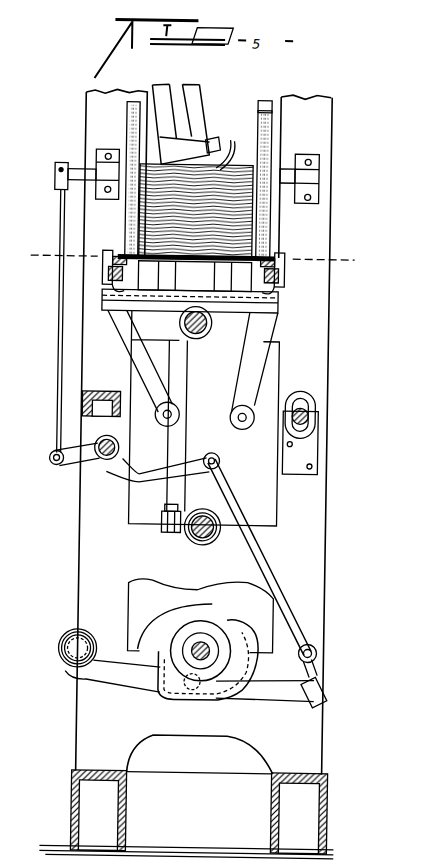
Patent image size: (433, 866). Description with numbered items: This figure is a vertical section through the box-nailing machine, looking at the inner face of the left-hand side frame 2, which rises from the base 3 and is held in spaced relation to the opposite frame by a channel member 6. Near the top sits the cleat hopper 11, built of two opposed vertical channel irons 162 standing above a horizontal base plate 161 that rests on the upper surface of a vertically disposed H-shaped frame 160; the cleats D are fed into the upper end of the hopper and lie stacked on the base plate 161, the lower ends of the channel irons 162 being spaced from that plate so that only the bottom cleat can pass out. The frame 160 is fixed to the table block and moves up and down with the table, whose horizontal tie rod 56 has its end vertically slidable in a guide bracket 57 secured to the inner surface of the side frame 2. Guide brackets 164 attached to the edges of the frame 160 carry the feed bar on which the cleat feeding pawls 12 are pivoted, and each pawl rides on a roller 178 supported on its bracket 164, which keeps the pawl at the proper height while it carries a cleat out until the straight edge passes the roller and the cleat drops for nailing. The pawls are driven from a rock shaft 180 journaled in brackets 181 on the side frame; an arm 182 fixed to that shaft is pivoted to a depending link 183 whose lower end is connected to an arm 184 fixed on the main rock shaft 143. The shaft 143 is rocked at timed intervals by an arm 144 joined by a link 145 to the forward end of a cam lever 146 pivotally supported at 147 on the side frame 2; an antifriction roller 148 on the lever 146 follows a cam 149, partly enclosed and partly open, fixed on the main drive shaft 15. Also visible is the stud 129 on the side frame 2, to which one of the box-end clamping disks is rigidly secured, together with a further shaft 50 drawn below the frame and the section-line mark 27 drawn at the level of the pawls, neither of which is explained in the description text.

The side frame 2 is at (82, 549).
The base 3 is at (110, 772).
The channel member 6 is at (103, 393).
The cleat hopper 11 is at (258, 108).
The cleat feeding pawl 12 is at (112, 257).
The main drive shaft 15 is at (207, 628).
The section line 27 is at (193, 257).
The shaft 50 is at (194, 540).
The tie rod 56 is at (300, 405).
The guide bracket 57 is at (303, 478).
The stud 129 is at (200, 335).
The main rock shaft 143 is at (110, 440).
The arm 144 is at (150, 470).
The link 145 is at (240, 500).
The cam lever 146 is at (268, 697).
The pivot 147 is at (78, 646).
The antifriction roller 148 is at (180, 690).
The cam 149 is at (165, 638).
The H-shaped frame 160 is at (258, 331).
The base plate 161 is at (209, 268).
The channel iron 162 is at (123, 131).
The guide bracket 164 is at (104, 272).
The roller 178 is at (112, 287).
The rock shaft 180 is at (70, 170).
The bracket 181 is at (107, 180).
The arm 182 is at (57, 166).
The depending link 183 is at (58, 411).
The arm 184 is at (68, 470).
The cleat D is at (228, 146).